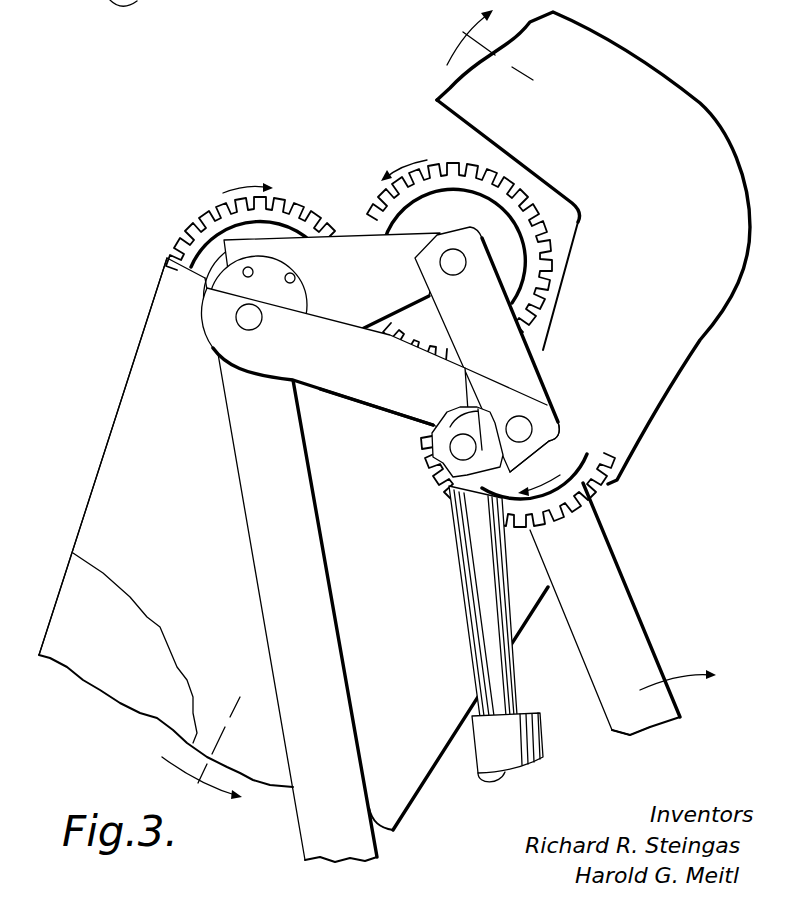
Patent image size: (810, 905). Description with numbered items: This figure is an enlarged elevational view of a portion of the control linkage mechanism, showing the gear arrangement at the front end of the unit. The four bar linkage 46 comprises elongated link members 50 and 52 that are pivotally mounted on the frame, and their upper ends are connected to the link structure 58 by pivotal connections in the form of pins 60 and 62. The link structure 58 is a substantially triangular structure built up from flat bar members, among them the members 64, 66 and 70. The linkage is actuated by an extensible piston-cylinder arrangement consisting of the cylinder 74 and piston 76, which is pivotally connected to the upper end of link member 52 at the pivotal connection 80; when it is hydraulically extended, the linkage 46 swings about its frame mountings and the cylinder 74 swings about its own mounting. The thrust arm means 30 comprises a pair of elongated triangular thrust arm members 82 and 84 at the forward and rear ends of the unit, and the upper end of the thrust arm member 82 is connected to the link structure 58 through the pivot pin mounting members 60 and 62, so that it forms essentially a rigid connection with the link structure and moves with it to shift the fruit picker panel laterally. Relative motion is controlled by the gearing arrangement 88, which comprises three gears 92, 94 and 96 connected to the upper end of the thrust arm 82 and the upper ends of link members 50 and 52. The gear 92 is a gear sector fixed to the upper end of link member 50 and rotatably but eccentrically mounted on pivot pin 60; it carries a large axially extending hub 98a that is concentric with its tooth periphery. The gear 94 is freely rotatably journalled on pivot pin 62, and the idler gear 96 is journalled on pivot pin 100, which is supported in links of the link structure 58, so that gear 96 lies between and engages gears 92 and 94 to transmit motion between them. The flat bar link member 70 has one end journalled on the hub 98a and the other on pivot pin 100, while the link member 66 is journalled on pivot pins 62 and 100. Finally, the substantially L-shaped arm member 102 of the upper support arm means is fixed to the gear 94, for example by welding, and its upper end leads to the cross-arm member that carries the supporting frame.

The thrust arm means 30 is at (78, 513).
The four bar linkage 46 is at (643, 600).
The link member 50 is at (270, 629).
The link member 52 is at (637, 635).
The link structure 58 is at (356, 408).
The pin 60 is at (241, 325).
The pin 62 is at (533, 429).
The flat bar member 64 is at (388, 404).
The flat bar member 66 is at (522, 345).
The flat bar link member 70 is at (357, 248).
The cylinder 74 is at (480, 760).
The piston 76 is at (527, 705).
The pivotal connection 80 is at (445, 461).
The thrust arm member 82 is at (105, 443).
The thrust arm member 84 is at (75, 610).
The gearing arrangement 88 is at (366, 169).
The gear 92 is at (203, 220).
The gear 94 is at (592, 490).
The idler gear 96 is at (535, 202).
The hub 98a is at (223, 287).
The pivot pin 100 is at (453, 249).
The arm member 102 is at (703, 112).